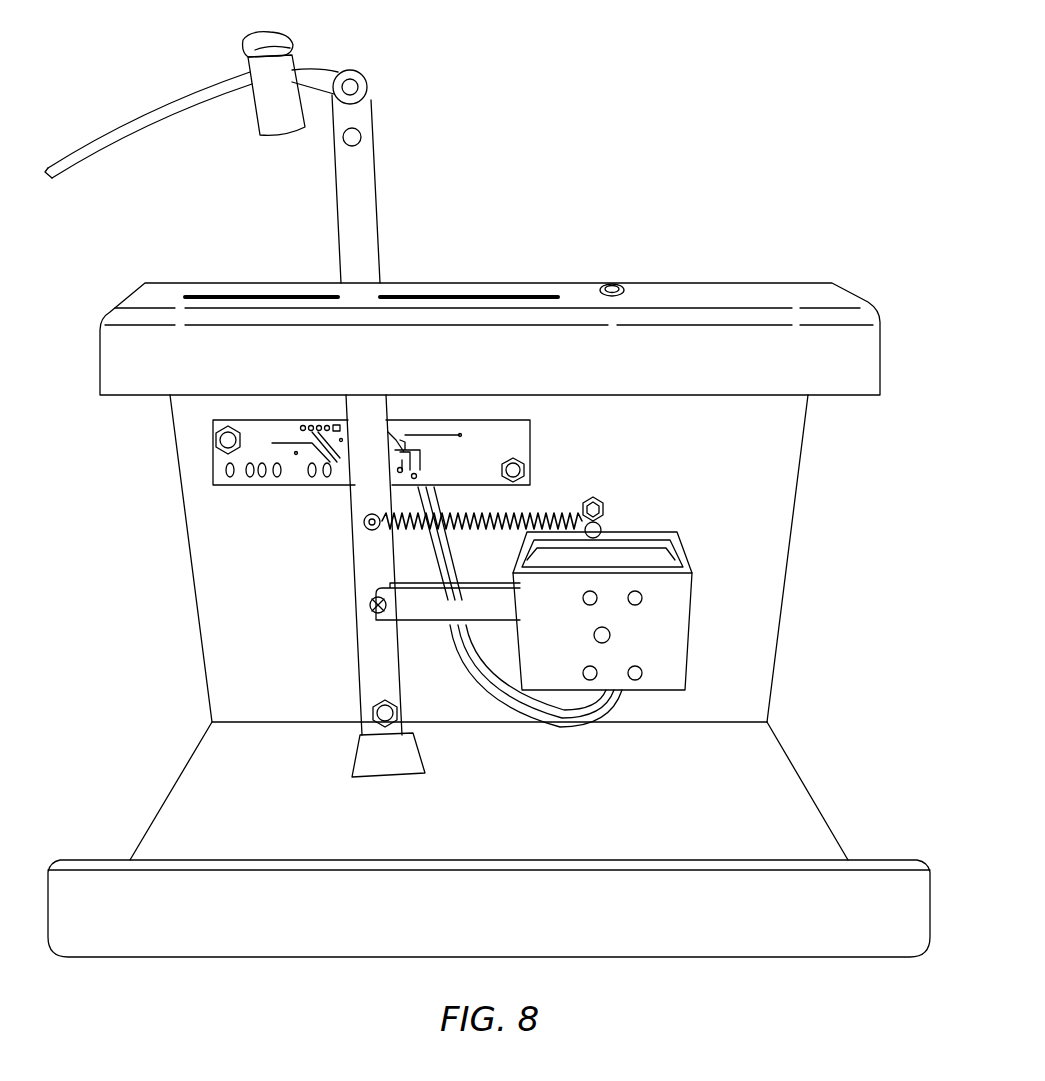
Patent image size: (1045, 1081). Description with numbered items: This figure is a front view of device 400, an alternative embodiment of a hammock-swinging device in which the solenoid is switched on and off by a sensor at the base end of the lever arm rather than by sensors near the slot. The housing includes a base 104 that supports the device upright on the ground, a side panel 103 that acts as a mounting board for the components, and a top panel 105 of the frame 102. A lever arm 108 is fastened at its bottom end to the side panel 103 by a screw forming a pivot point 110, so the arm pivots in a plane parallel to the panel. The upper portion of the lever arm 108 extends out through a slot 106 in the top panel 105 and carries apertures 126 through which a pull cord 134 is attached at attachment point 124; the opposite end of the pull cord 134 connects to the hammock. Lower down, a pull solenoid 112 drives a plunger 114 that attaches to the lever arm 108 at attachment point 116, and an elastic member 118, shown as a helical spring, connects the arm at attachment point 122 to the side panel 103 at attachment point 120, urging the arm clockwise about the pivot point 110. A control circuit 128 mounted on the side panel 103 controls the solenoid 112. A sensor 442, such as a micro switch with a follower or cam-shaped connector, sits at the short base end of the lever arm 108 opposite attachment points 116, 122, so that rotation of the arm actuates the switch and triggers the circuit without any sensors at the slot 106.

The device 400 is at (722, 106).
The frame 102 is at (787, 587).
The side panel 103 is at (739, 479).
The base 104 is at (517, 822).
The top panel 105 is at (770, 300).
The slot 106 is at (512, 296).
The lever arm 108 is at (363, 248).
The pivot point 110 is at (375, 728).
The solenoid 112 is at (668, 637).
The plunger 114 is at (415, 607).
The attachment point 116 is at (370, 608).
The elastic member 118 is at (538, 518).
The attachment point 120 is at (604, 512).
The attachment point 122 is at (366, 528).
The attachment point 124 is at (367, 87).
The apertures 126 is at (362, 131).
The control circuit 128 is at (213, 470).
The pull cord 134 is at (173, 97).
The sensor 442 is at (388, 763).